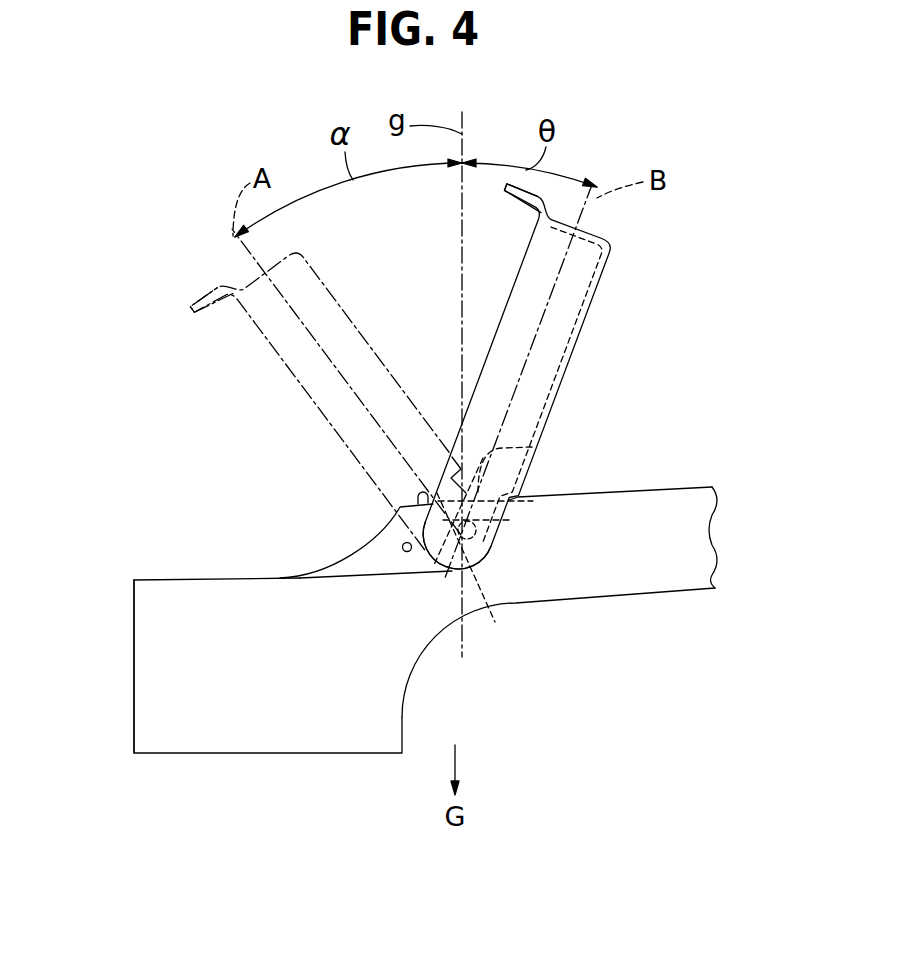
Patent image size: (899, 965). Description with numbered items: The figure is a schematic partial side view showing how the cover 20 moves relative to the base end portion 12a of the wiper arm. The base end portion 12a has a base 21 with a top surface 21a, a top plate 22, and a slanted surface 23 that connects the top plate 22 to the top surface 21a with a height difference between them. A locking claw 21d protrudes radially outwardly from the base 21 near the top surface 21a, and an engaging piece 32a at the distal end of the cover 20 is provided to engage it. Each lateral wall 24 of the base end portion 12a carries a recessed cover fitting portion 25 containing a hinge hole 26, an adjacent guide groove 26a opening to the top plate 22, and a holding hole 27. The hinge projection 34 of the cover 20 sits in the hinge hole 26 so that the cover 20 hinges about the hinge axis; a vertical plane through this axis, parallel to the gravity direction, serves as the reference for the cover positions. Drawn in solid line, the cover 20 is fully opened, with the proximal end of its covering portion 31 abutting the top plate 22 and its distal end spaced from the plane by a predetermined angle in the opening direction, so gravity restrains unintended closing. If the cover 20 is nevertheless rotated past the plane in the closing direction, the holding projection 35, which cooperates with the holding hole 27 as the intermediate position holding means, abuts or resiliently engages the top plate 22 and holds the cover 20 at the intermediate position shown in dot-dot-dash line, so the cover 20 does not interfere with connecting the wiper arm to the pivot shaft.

The base end portion 12a is at (570, 561).
The cover 20 is at (330, 297).
The base 21 is at (261, 628).
The top surface of the base 21a is at (153, 576).
The locking claw 21d is at (133, 597).
The top plate 22 is at (591, 492).
The slanted surface 23 is at (387, 527).
The lateral wall 24 is at (645, 582).
The cover fitting portion 25 is at (356, 586).
The hinge hole 26 is at (507, 542).
The guide groove 26a is at (512, 521).
The holding hole 27 is at (407, 553).
The covering portion 31 is at (574, 352).
The engaging piece 32a is at (203, 300).
The hinge projection 34 is at (475, 574).
The holding projection 35 is at (417, 497).